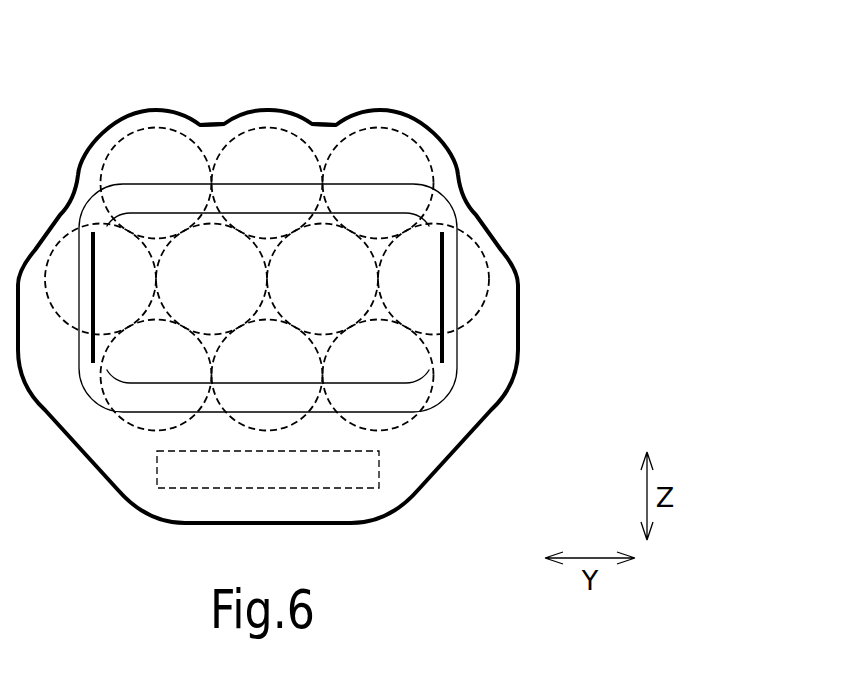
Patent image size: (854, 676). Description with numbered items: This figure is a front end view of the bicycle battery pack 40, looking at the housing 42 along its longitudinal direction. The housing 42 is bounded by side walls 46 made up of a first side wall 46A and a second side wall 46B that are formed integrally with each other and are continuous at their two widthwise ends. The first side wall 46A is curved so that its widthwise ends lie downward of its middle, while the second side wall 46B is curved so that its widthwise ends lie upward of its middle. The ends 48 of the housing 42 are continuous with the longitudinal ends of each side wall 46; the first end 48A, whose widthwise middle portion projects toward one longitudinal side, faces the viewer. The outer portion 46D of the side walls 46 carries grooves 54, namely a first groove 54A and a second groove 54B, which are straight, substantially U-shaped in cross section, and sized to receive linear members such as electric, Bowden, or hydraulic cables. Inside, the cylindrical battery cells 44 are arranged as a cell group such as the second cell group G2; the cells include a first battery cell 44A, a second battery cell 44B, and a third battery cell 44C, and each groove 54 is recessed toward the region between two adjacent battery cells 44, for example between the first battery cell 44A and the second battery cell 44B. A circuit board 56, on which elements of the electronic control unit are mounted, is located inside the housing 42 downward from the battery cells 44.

The battery pack 40 is at (515, 85).
The housing 42 is at (447, 172).
The battery cells 44 is at (267, 228).
The first battery cell 44A is at (118, 133).
The second battery cell 44B is at (267, 126).
The third battery cell 44C is at (397, 130).
The grooves 54 is at (263, 79).
The first groove 54A is at (205, 122).
The second groove 54B is at (319, 122).
The side walls 46 is at (359, 387).
The first side wall 46A is at (485, 228).
The second side wall 46B is at (497, 377).
The outer portion 46D is at (330, 513).
The ends 48 is at (366, 297).
The first end 48A is at (418, 283).
The second cell group G2 is at (499, 340).
The circuit board 56 is at (379, 468).